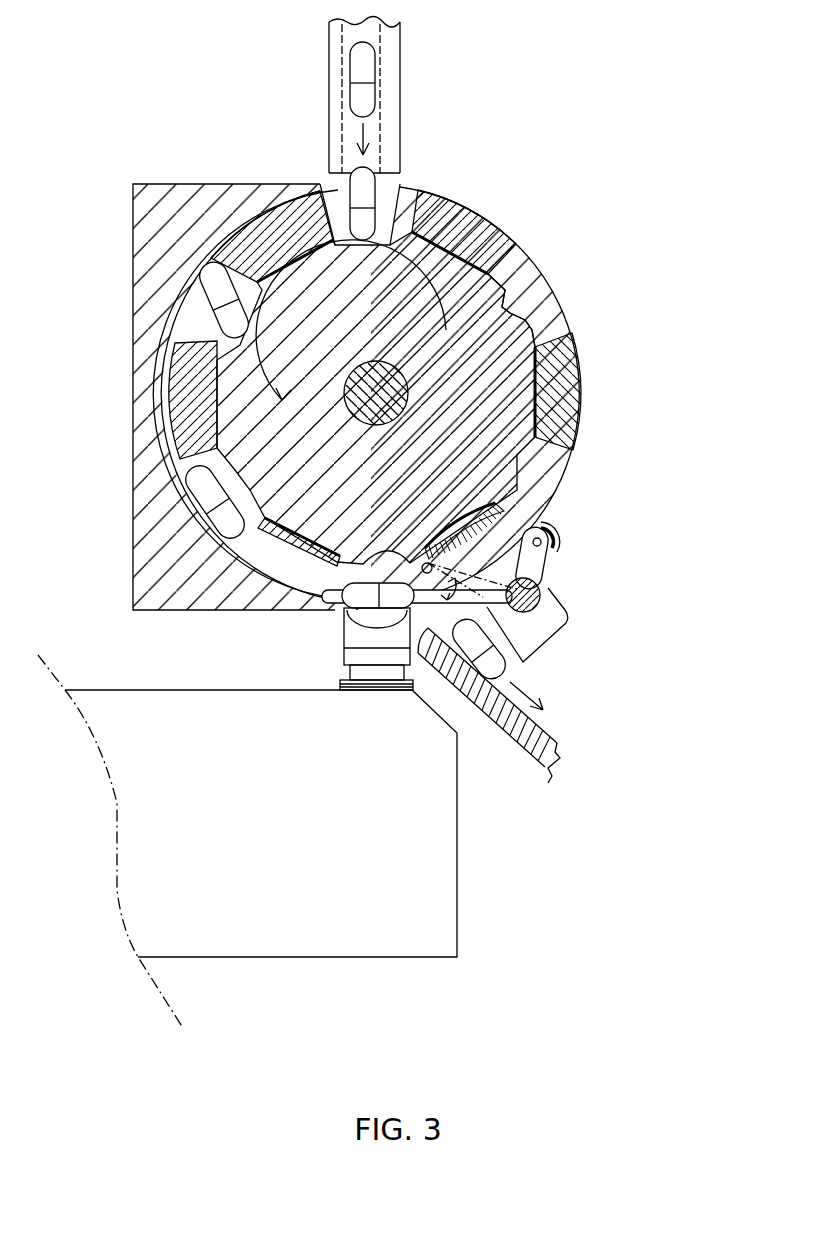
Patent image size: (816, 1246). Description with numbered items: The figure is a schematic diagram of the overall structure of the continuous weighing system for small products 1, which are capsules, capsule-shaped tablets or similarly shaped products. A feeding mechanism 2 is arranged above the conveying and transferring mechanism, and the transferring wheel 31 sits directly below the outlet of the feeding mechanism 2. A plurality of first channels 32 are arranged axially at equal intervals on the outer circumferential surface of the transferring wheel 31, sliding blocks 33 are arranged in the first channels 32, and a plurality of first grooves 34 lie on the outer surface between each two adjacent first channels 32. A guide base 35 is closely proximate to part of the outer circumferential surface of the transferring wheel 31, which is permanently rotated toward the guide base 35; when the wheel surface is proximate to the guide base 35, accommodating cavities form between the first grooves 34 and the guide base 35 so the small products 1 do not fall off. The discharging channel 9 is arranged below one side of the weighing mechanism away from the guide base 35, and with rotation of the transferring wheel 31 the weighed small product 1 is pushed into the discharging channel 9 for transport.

The small product 1 is at (362, 72).
The feeding mechanism 2 is at (385, 142).
The transferring wheel 31 is at (365, 520).
The first channel 32 is at (540, 393).
The sliding block 33 is at (458, 224).
The first groove 34 is at (530, 295).
The guide base 35 is at (345, 589).
The discharging channel 9 is at (528, 728).